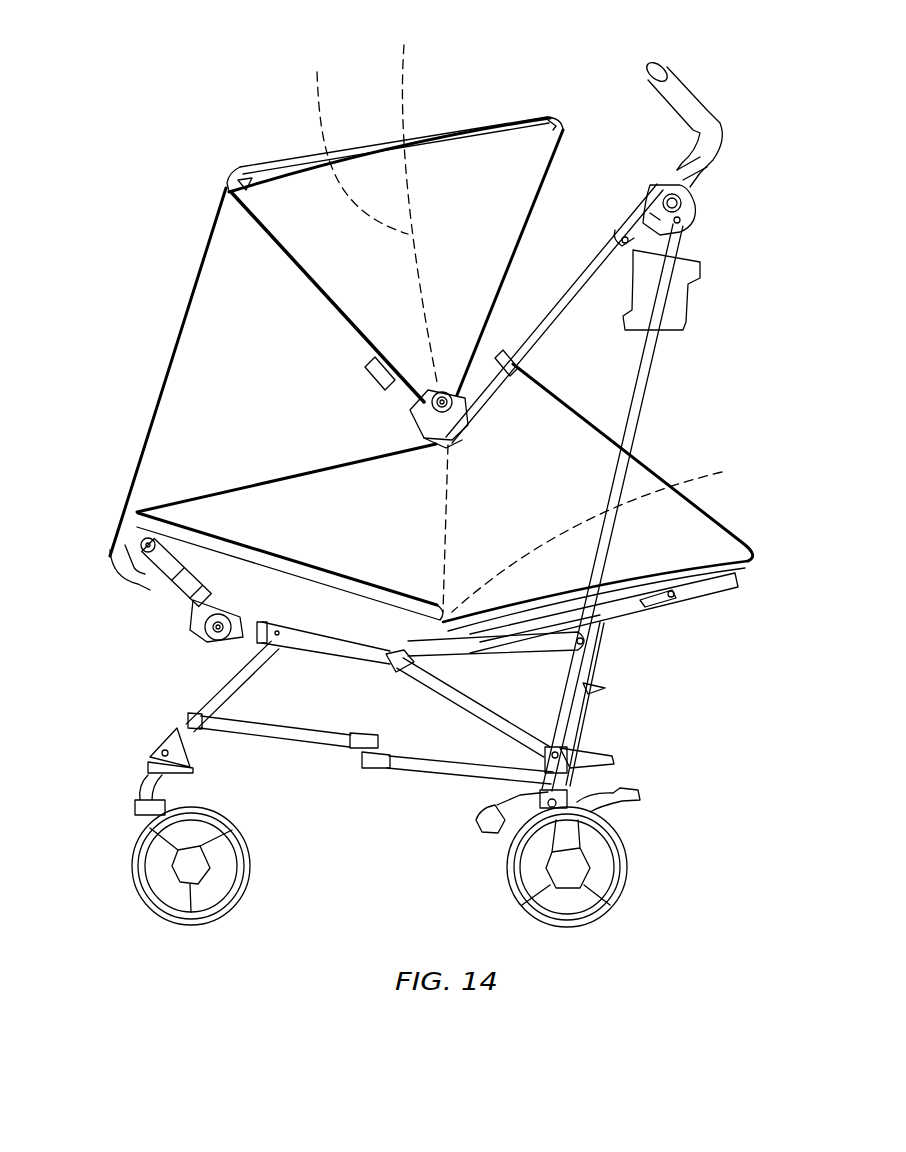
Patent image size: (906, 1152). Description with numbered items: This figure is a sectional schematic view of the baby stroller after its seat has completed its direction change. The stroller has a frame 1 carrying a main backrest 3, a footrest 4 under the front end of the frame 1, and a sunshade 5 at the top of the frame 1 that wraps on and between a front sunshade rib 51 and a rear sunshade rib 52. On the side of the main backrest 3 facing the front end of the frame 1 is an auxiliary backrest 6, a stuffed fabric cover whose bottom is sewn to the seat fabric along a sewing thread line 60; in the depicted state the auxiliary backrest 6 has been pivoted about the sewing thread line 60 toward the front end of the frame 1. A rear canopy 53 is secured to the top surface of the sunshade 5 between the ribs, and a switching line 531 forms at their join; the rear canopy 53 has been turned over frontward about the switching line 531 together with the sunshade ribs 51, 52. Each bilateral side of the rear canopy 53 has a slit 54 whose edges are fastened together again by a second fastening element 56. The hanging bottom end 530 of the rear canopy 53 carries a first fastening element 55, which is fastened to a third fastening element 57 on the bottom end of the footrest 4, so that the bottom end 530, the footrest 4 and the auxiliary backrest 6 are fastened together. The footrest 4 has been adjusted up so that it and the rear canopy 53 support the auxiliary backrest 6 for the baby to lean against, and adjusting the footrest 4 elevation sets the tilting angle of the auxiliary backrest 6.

The frame 1 is at (677, 407).
The main backrest 3 is at (708, 590).
The footrest 4 is at (177, 577).
The sunshade 5 is at (404, 306).
The auxiliary backrest 6 is at (180, 532).
The front sunshade rib 51 is at (232, 178).
The rear sunshade rib 52 is at (557, 125).
The rear canopy 53 is at (193, 317).
The switching line 531 is at (371, 315).
The bottom end 530 is at (130, 567).
The slit 54 is at (377, 377).
The second fastening element 56 is at (261, 399).
The first fastening element 55 is at (128, 552).
The third fastening element 57 is at (82, 562).
The sewing thread line 60 is at (603, 535).